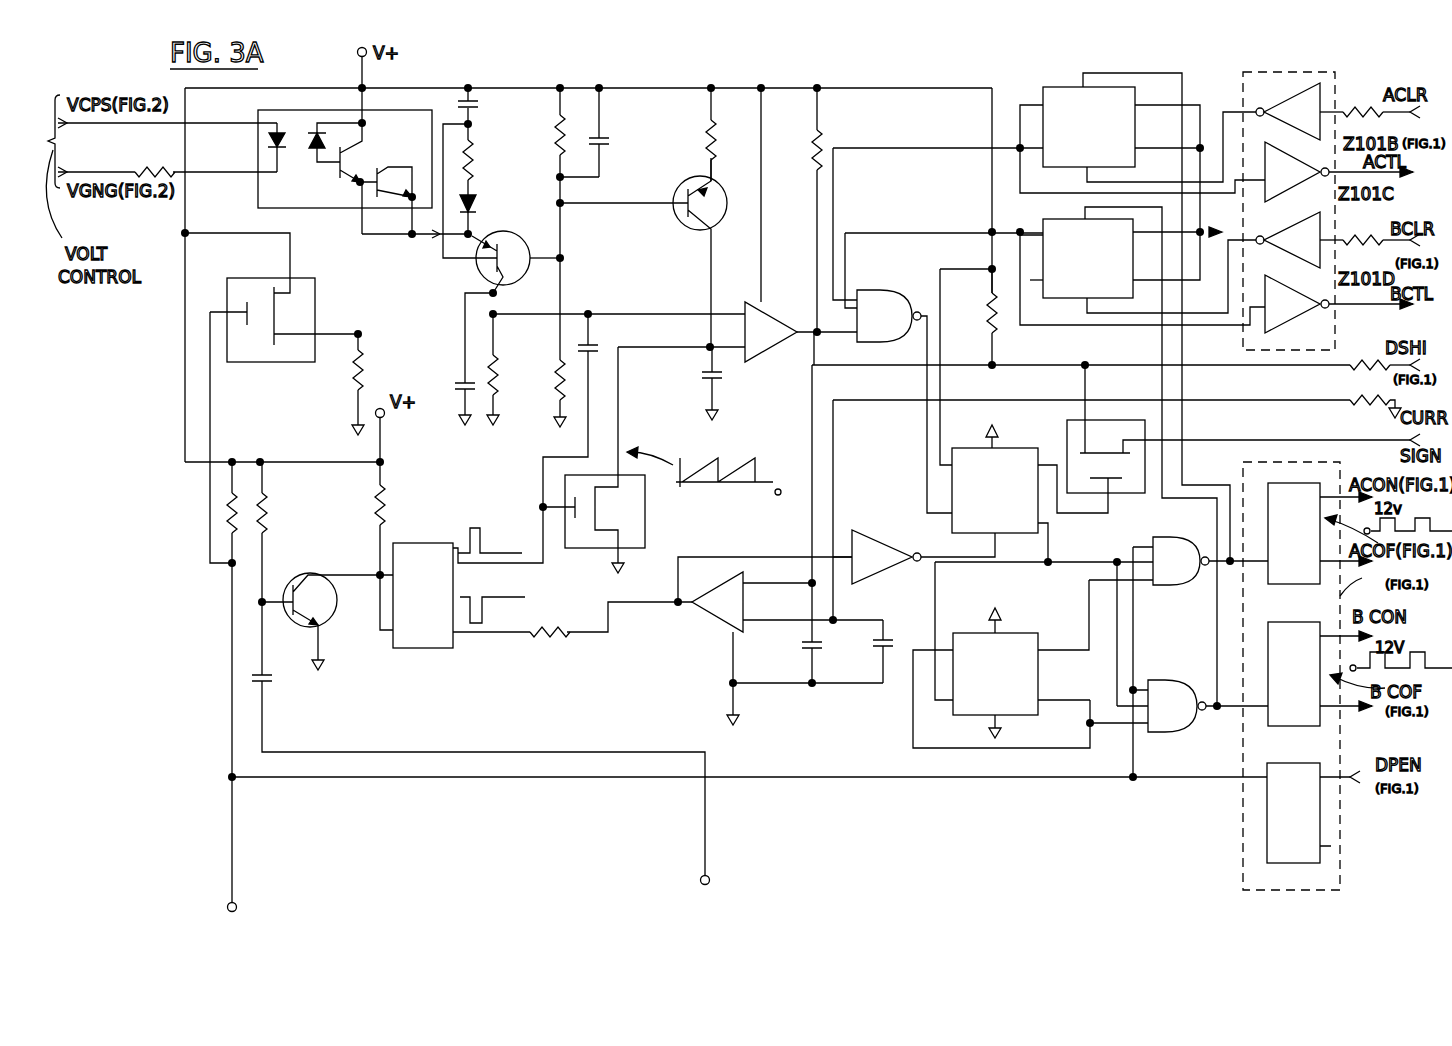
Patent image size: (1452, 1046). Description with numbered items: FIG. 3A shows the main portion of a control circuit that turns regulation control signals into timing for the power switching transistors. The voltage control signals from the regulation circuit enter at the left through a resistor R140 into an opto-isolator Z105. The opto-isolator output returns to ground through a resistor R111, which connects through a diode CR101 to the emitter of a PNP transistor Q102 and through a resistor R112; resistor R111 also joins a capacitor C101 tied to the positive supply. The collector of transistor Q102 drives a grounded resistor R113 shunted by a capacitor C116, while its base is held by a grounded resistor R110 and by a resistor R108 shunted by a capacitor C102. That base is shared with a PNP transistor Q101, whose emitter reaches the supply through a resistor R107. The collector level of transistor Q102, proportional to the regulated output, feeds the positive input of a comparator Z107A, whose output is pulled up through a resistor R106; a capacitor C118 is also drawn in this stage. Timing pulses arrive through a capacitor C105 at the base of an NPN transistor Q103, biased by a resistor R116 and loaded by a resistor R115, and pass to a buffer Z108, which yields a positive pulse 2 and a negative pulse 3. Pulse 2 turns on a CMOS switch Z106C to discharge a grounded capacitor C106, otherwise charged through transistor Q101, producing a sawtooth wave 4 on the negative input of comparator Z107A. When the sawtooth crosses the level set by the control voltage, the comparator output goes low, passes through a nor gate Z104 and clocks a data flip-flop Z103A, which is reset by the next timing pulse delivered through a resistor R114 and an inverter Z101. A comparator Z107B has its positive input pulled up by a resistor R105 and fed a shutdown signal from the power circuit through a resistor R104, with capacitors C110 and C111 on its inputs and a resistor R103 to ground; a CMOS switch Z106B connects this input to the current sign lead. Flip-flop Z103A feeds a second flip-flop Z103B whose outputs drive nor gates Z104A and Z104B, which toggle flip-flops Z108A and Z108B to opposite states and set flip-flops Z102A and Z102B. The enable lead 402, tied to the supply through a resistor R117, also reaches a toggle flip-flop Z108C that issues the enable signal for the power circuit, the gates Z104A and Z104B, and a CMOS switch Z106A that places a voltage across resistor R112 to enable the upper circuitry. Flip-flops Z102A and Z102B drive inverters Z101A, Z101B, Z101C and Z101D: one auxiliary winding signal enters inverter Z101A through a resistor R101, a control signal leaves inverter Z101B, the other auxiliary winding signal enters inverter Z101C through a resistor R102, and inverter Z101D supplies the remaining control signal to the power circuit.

The resistor R140 is at (163, 166).
The opto-isolator Z105 is at (288, 130).
The capacitor C101 is at (472, 108).
The resistor R111 is at (474, 160).
The diode CR101 is at (476, 194).
The PNP transistor Q102 is at (476, 262).
The resistor R108 is at (552, 133).
The capacitor C102 is at (612, 136).
The PNP transistor Q101 is at (696, 228).
The resistor R107 is at (706, 130).
The resistor R106 is at (810, 134).
The comparator Z107A is at (790, 372).
The capacitor C106 is at (704, 376).
The CMOS switch Z106A is at (260, 292).
The resistor R112 is at (364, 376).
The capacitor C116 is at (455, 392).
The resistor R113 is at (520, 360).
The resistor R110 is at (555, 380).
The capacitor C118 is at (592, 348).
The CMOS switch Z106C is at (638, 508).
The sawtooth wave 4 is at (729, 470).
The enable lead 402 is at (210, 430).
The resistor R117 is at (226, 514).
The resistor R116 is at (266, 520).
The resistor R115 is at (384, 498).
The buffer Z108 is at (432, 560).
The positive pulse 2 is at (492, 550).
The negative pulse 3 is at (522, 600).
The resistor R114 is at (572, 628).
The NPN transistor Q103 is at (302, 585).
The capacitor C105 is at (278, 682).
The comparator Z107B is at (720, 610).
The capacitor C110 is at (800, 646).
The capacitor C111 is at (870, 646).
The nor gate Z104 is at (872, 312).
The resistor R105 is at (1000, 338).
The flip-flop Z102A is at (1062, 100).
The flip-flop Z102B is at (1064, 255).
The data flip-flop Z103A is at (968, 458).
The inverter Z101 is at (882, 548).
The CMOS switch Z106B is at (1118, 436).
The nor gate Z104A is at (1177, 556).
The nor gate Z104B is at (1205, 668).
The flip-flop Z103B is at (970, 645).
The inverter Z101A is at (1300, 96).
The resistor R101 is at (1364, 104).
The inverter Z101B is at (1300, 176).
The inverter Z101C is at (1302, 232).
The resistor R102 is at (1384, 236).
The inverter Z101D is at (1298, 312).
The resistor R104 is at (1358, 364).
The resistor R103 is at (1360, 405).
The toggle flip-flop Z108A is at (1306, 452).
The toggle flip-flop Z108B is at (1298, 640).
The toggle flip-flop Z108C is at (1272, 800).